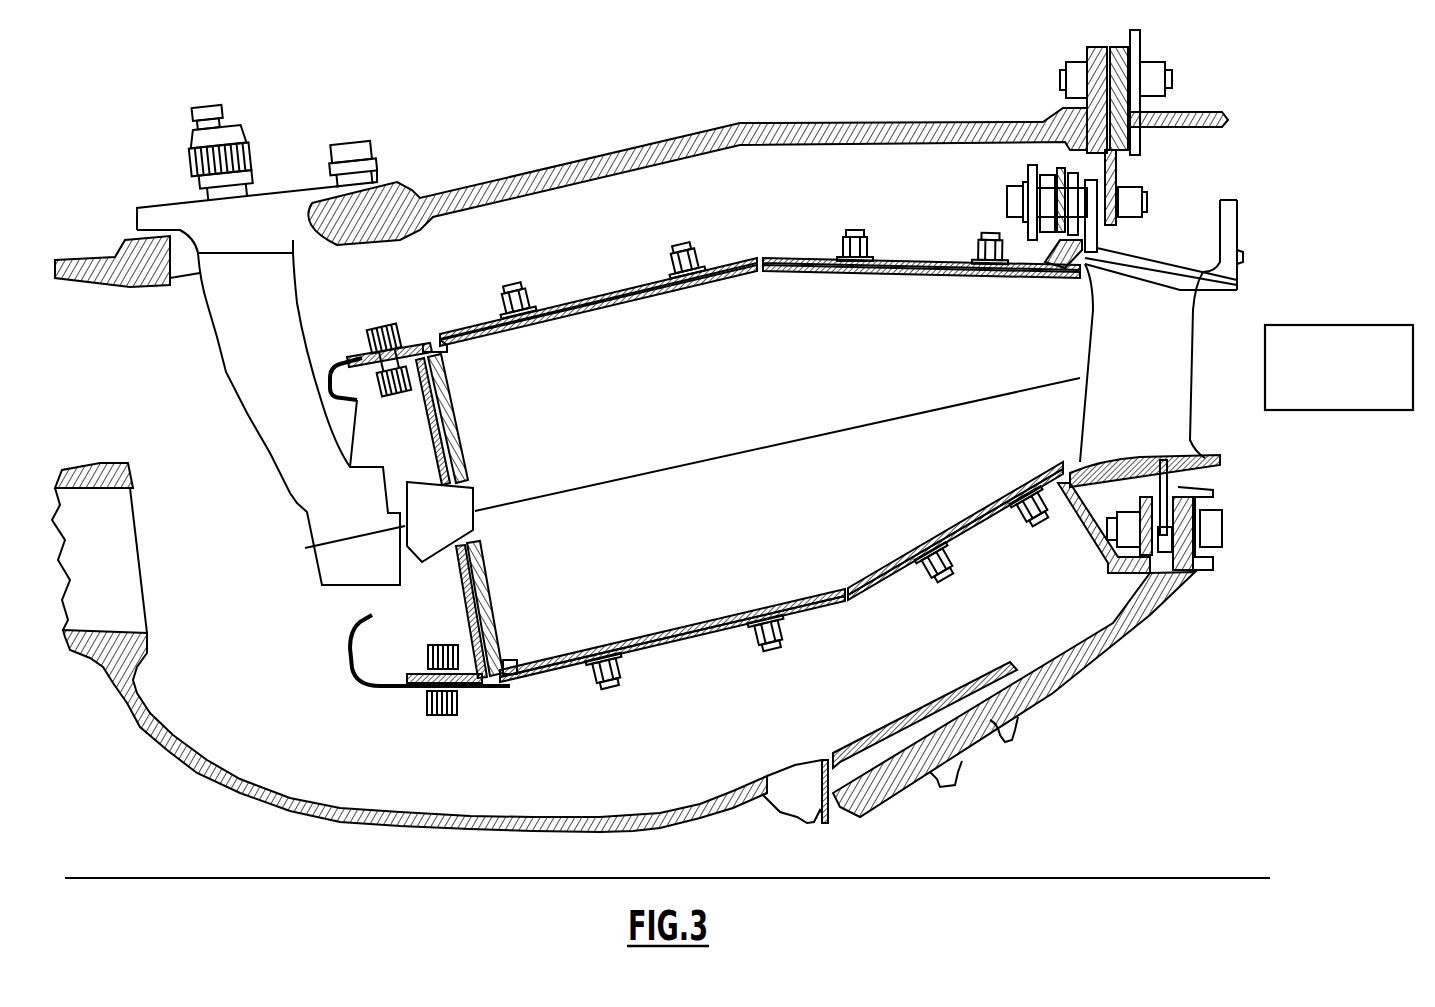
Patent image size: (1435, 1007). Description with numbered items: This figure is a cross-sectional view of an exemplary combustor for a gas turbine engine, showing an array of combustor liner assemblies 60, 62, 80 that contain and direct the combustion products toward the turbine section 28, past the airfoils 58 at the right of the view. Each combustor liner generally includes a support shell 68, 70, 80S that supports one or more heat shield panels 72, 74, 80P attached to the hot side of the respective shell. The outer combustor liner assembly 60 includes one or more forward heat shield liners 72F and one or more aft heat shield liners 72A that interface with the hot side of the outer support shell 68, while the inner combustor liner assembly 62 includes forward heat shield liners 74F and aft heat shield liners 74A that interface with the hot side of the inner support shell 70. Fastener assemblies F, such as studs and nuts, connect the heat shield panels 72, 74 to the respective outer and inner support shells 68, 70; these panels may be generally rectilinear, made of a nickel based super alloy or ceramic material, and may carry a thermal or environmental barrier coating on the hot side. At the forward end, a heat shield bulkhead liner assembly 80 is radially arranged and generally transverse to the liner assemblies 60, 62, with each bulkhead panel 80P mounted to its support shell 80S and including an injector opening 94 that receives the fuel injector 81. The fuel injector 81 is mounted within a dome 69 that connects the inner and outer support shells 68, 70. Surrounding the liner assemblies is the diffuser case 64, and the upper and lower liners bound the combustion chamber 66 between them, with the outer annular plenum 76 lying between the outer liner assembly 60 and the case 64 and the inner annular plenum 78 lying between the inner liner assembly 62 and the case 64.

The turbine section 28 is at (1356, 377).
The airfoils 58 is at (1153, 374).
The outer combustor liner assembly 60 is at (662, 236).
The inner combustor liner assembly 62 is at (851, 627).
The diffuser case 64 is at (977, 118).
The combustion chamber 66 is at (787, 451).
The outer support shell 68 is at (796, 258).
The dome 69 is at (368, 676).
The inner support shell 70 is at (813, 617).
The heat shield panels 72 is at (760, 311).
The forward heat shield liners 72F is at (632, 318).
The aft heat shield liners 72A is at (918, 278).
The heat shield panels 74 is at (781, 573).
The forward heat shield liners 74F is at (700, 617).
The aft heat shield liners 74A is at (988, 500).
The outer annular plenum 76 is at (749, 202).
The inner annular plenum 78 is at (663, 759).
The heat shield bulkhead liner assembly 80 is at (462, 519).
The bulkhead panel 80P is at (483, 577).
The support shell 80S is at (453, 595).
The fuel injector 81 is at (310, 500).
The injector opening 94 is at (472, 486).
The fastener assemblies F is at (535, 298).